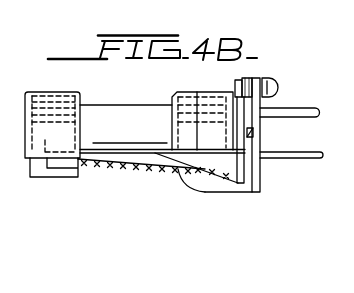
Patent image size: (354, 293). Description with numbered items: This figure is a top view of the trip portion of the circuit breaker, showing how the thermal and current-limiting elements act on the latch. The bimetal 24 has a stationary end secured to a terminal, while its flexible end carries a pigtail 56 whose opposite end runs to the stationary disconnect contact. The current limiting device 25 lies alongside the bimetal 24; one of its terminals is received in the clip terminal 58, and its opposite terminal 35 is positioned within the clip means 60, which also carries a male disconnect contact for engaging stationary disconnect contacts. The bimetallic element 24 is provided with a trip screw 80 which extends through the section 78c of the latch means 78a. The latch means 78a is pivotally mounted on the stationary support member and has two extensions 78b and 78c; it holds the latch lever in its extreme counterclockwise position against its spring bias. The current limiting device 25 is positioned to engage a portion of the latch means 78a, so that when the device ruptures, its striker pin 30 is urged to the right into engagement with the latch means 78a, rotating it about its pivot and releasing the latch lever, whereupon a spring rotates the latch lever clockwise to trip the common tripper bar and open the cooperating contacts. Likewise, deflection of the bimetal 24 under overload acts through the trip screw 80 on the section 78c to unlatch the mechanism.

The bimetal 24 is at (245, 153).
The current limiting device 25 is at (97, 105).
The striker pin 30 is at (247, 132).
The terminal of the current limiting device 35 is at (250, 152).
The pigtail 56 is at (128, 169).
The clip terminal 58 is at (25, 117).
The clip means 60 is at (200, 91).
The latch means 78a is at (299, 108).
The extension 78b is at (257, 192).
The section 78c is at (265, 80).
The trip screw 80 is at (240, 84).